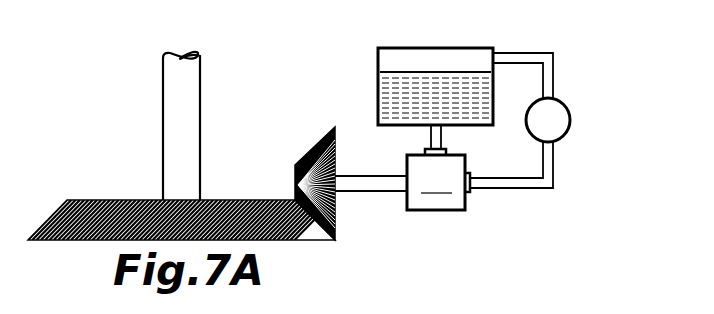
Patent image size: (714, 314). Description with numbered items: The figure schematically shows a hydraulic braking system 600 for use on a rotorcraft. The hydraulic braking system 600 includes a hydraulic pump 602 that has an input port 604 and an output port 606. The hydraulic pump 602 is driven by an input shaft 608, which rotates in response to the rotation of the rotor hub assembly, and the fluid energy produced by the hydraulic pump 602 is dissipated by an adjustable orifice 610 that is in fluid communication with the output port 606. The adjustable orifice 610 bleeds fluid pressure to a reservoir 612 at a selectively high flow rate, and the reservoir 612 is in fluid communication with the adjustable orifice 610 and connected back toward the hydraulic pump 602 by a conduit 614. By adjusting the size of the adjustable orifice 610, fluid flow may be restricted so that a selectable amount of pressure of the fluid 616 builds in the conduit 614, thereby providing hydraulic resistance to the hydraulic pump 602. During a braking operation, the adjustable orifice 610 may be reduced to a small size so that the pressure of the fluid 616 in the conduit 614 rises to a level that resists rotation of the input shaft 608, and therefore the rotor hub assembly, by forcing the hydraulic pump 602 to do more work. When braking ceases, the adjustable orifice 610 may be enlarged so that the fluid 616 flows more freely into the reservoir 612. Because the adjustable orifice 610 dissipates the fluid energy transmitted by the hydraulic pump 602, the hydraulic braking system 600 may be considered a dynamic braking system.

The hydraulic braking system 600 is at (305, 113).
The hydraulic pump 602 is at (436, 182).
The input port 604 is at (426, 152).
The output port 606 is at (468, 194).
The input shaft 608 is at (384, 194).
The adjustable orifice 610 is at (562, 121).
The reservoir 612 is at (458, 50).
The conduit 614 is at (548, 173).
The fluid 616 is at (421, 78).